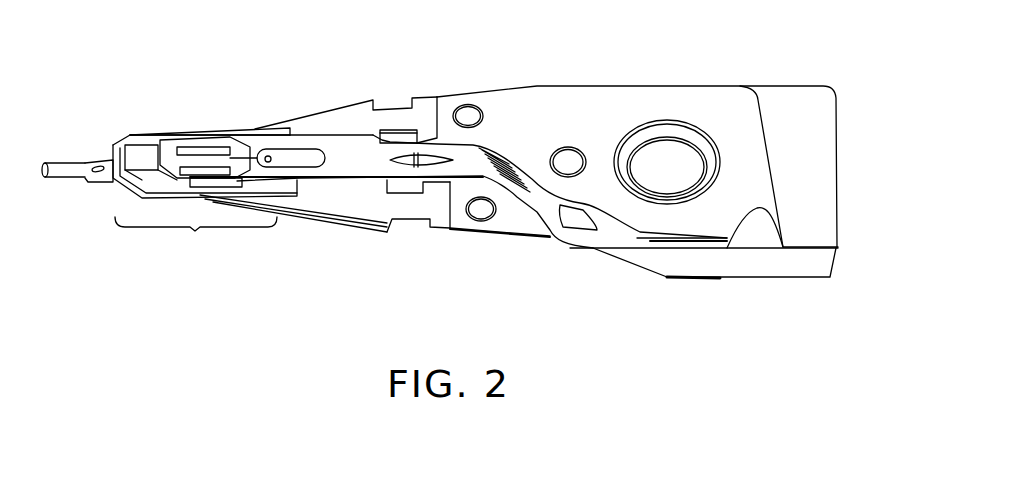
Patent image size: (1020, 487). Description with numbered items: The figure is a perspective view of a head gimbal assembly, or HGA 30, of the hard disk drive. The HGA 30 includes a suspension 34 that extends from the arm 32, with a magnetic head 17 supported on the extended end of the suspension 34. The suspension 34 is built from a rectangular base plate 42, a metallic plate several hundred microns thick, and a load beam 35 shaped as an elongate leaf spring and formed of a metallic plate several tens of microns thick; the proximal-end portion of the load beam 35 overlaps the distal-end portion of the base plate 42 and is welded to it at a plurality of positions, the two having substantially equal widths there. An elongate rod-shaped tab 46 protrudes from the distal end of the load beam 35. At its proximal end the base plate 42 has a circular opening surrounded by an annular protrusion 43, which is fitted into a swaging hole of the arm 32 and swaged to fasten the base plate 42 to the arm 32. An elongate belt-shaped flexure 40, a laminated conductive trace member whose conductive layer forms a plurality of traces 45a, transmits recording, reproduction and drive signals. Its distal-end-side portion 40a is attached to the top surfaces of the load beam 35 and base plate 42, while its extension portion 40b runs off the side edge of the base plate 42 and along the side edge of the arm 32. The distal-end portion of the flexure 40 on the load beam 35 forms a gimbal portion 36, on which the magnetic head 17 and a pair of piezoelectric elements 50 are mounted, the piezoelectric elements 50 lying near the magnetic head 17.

The magnetic head 17 is at (140, 152).
The head gimbal assembly (HGA) 30 is at (520, 66).
The arm 32 is at (797, 100).
The suspension 34 is at (443, 70).
The load beam 35 is at (342, 200).
The gimbal portion 36 is at (219, 194).
The flexure 40 is at (533, 192).
The distal-end-side portion 40a is at (363, 147).
The extension portion 40b is at (707, 266).
The base plate 42 is at (605, 100).
The annular protrusion 43 is at (668, 142).
The traces 45a is at (788, 268).
The tab 46 is at (58, 162).
The piezoelectric (PZT) elements 50 is at (193, 148).